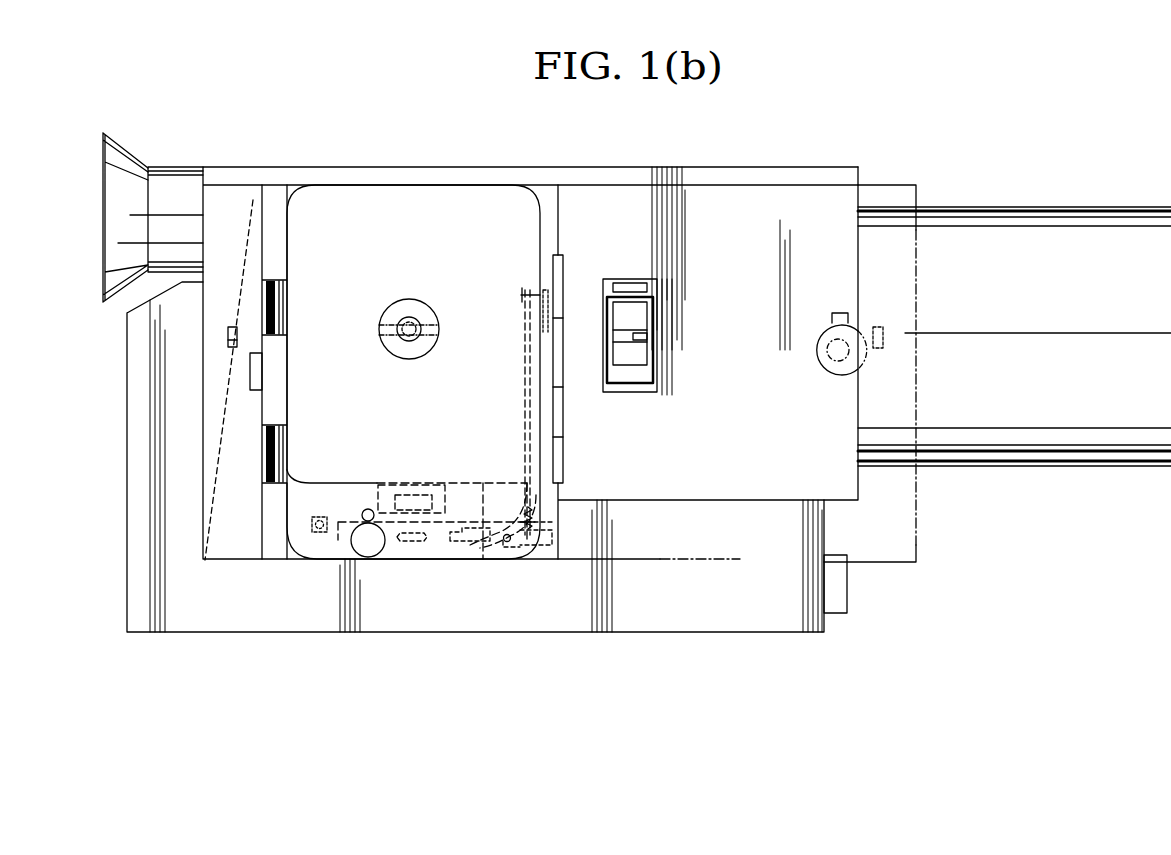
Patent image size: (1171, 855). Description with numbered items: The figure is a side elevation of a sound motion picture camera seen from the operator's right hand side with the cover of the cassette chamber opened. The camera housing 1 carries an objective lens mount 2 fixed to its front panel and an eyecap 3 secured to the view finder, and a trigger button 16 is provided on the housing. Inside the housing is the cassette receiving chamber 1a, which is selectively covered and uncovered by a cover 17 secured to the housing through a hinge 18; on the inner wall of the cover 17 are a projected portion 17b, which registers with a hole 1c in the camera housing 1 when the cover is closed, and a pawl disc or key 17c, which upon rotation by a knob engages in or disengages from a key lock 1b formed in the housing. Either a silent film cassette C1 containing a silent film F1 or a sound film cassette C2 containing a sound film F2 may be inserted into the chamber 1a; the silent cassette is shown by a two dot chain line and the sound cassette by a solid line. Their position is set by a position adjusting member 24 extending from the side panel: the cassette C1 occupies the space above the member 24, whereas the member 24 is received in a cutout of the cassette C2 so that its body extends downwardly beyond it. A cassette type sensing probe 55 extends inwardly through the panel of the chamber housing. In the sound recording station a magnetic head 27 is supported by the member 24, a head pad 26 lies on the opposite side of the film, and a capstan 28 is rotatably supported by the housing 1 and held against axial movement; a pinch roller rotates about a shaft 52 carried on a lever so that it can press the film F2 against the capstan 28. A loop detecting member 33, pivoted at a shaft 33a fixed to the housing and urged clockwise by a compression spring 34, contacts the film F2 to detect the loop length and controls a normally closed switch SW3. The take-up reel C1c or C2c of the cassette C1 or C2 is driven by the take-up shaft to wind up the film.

The camera housing 1 is at (733, 361).
The cassette receiving chamber 1a is at (272, 537).
The key lock 1b is at (250, 378).
The hole 1c is at (232, 327).
The objective lens mount 2 is at (1049, 327).
The eyecap 3 is at (122, 162).
The trigger button 16 is at (835, 600).
The cover 17 is at (893, 525).
The projected portion 17b is at (880, 327).
The pawl disc or key 17c is at (838, 312).
The hinge 18 is at (562, 278).
The position adjusting member 24 is at (448, 483).
The head pad 26 is at (412, 543).
The magnetic head 27 is at (418, 485).
The capstan 28 is at (368, 508).
The loop detecting member 33 is at (455, 543).
The shaft 33a is at (505, 550).
The compression spring 34 is at (550, 524).
The shaft 52 is at (372, 548).
The cassette type sensing probe 55 is at (316, 535).
The normally closed switch SW3 is at (553, 548).
The silent film cassette C1 is at (413, 372).
The sound film cassette C2 is at (423, 408).
The take-up reel C1c is at (411, 308).
The take-up reel C2c is at (410, 305).
The silent film F1 is at (509, 411).
The sound film F2 is at (527, 375).